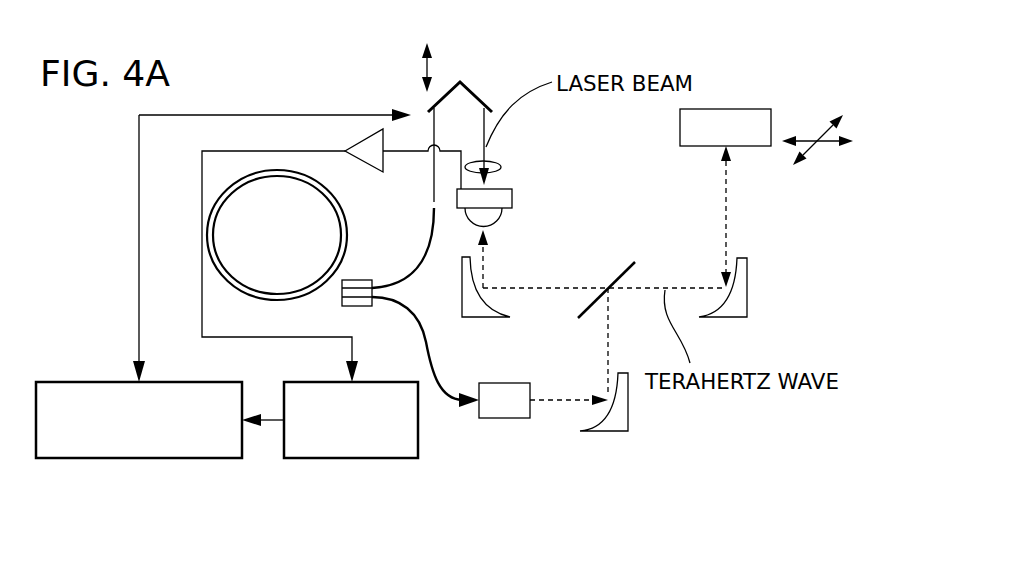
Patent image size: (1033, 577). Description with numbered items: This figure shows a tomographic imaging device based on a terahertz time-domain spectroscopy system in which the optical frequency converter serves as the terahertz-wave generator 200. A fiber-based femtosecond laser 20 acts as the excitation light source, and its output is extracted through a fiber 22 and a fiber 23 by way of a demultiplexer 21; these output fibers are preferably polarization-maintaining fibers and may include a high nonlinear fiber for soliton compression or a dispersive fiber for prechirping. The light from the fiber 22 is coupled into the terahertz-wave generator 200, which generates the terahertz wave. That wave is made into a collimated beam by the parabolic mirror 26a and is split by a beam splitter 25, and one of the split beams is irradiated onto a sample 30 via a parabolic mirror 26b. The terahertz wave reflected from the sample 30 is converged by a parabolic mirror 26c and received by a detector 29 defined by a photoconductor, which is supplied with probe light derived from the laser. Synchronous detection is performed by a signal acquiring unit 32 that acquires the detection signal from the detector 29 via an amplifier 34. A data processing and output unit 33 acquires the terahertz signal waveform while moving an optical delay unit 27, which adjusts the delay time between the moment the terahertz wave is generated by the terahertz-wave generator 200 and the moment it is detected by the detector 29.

The femtosecond laser 20 is at (271, 170).
The demultiplexer 21 is at (355, 280).
The fiber 22 is at (421, 337).
The fiber 23 is at (432, 226).
The beam splitter 25 is at (612, 283).
The parabolic mirror 26a is at (620, 431).
The parabolic mirror 26b is at (742, 293).
The parabolic mirror 26c is at (462, 302).
The optical delay unit 27 is at (478, 94).
The detector 29 is at (512, 196).
The sample 30 is at (725, 117).
The signal acquiring unit 32 is at (300, 458).
The data processing and output unit 33 is at (85, 458).
The amplifier 34 is at (362, 145).
The terahertz-wave generator 200 is at (493, 418).